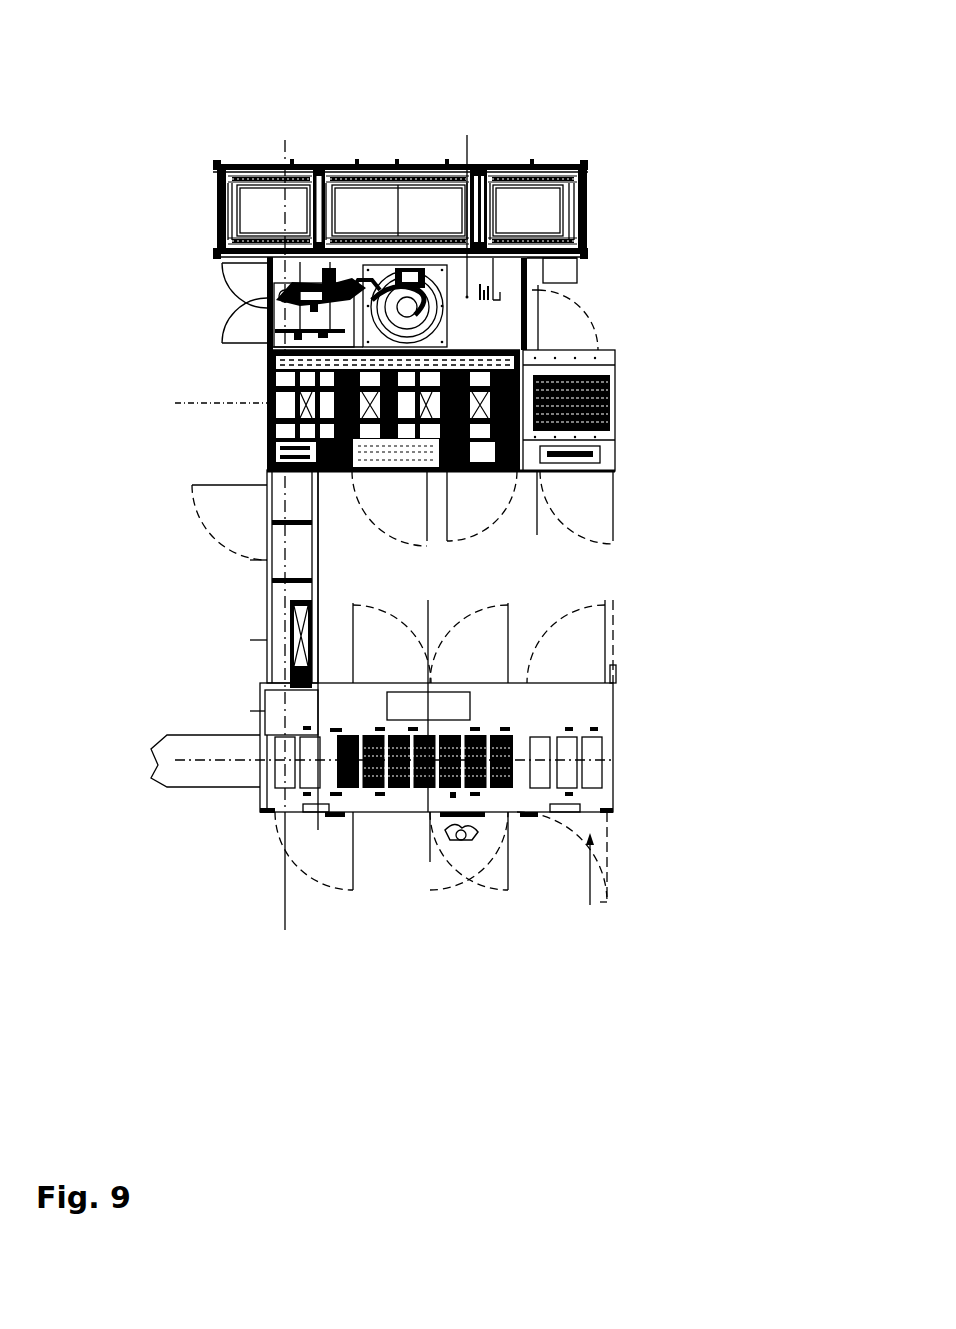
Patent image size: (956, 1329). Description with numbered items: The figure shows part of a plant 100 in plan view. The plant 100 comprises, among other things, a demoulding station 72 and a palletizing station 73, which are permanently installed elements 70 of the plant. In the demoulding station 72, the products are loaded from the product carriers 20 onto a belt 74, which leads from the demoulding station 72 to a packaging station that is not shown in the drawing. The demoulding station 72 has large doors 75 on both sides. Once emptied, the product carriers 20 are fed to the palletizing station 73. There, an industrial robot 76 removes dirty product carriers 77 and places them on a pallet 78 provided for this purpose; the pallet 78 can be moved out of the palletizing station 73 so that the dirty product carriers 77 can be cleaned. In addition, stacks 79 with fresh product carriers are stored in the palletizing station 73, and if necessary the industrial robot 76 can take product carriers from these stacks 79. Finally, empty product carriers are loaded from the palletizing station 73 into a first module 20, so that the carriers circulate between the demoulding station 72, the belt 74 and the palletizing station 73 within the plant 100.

The plant 100 is at (163, 114).
The product carriers 20 is at (578, 380).
The permanently installed elements 70 is at (224, 696).
The demoulding station 72 is at (405, 800).
The palletizing station 73 is at (492, 131).
The belt 74 is at (200, 777).
The large doors 75 is at (384, 798).
The industrial robot 76 is at (408, 272).
The dirty product carriers 77 is at (270, 292).
The pallet 78 is at (268, 332).
The stacks with fresh product carriers 79 is at (352, 208).